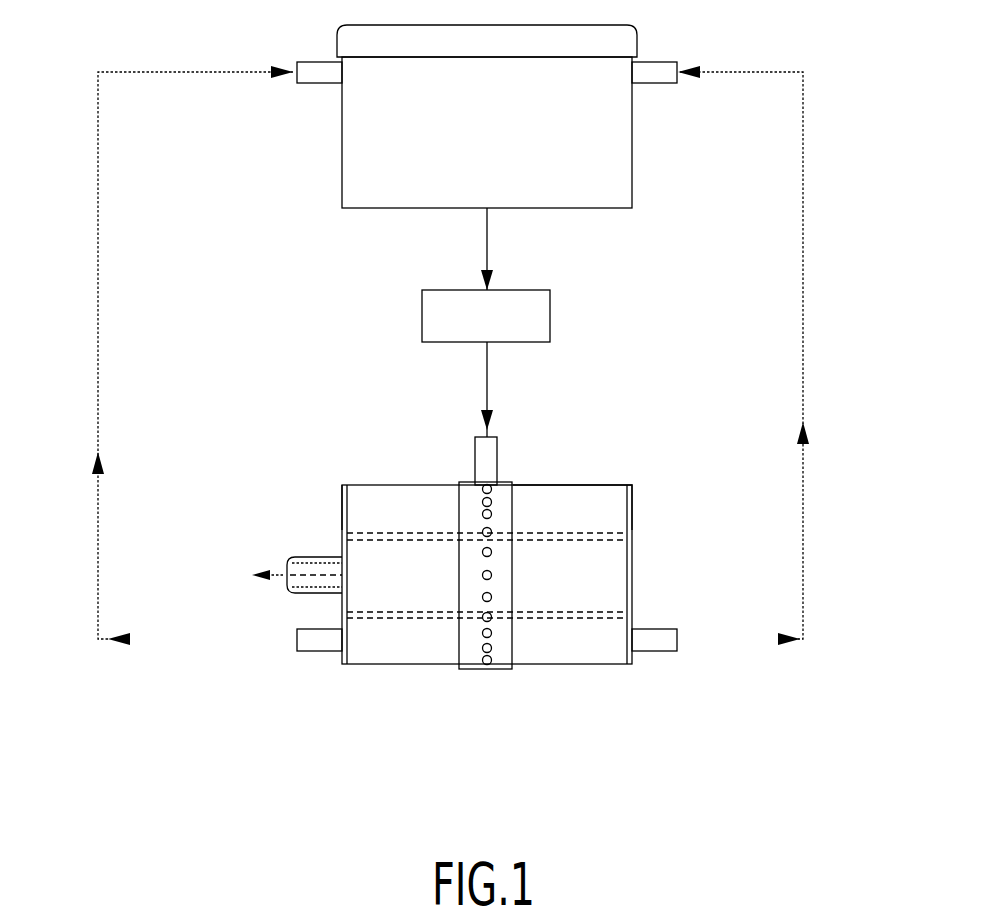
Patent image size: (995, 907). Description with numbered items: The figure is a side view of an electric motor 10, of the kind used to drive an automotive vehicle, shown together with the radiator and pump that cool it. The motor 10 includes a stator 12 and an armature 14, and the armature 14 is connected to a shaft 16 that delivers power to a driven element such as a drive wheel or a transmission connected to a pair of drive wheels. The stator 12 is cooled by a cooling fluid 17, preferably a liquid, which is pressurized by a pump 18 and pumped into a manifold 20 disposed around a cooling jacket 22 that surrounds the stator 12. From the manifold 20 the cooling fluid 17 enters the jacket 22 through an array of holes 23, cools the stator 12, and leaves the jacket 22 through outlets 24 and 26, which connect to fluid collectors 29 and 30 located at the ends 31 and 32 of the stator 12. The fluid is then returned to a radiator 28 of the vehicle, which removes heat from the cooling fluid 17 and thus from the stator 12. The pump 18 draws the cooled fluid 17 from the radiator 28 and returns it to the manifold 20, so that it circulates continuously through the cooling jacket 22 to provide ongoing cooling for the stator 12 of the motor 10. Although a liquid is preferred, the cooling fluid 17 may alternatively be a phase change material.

The electric motor 10 is at (375, 478).
The stator 12 is at (576, 496).
The armature 14 is at (578, 585).
The shaft 16 is at (310, 563).
The cooling fluid 17 is at (486, 258).
The pump 18 is at (550, 318).
The manifold 20 is at (512, 488).
The cooling jacket 22 is at (606, 496).
The array of holes 23 is at (481, 514).
The outlet 24 is at (318, 646).
The outlet 26 is at (655, 646).
The radiator 28 is at (622, 156).
The fluid collector 29 is at (342, 497).
The fluid collector 30 is at (634, 520).
The end of stator 31 is at (342, 518).
The end of stator 32 is at (634, 500).